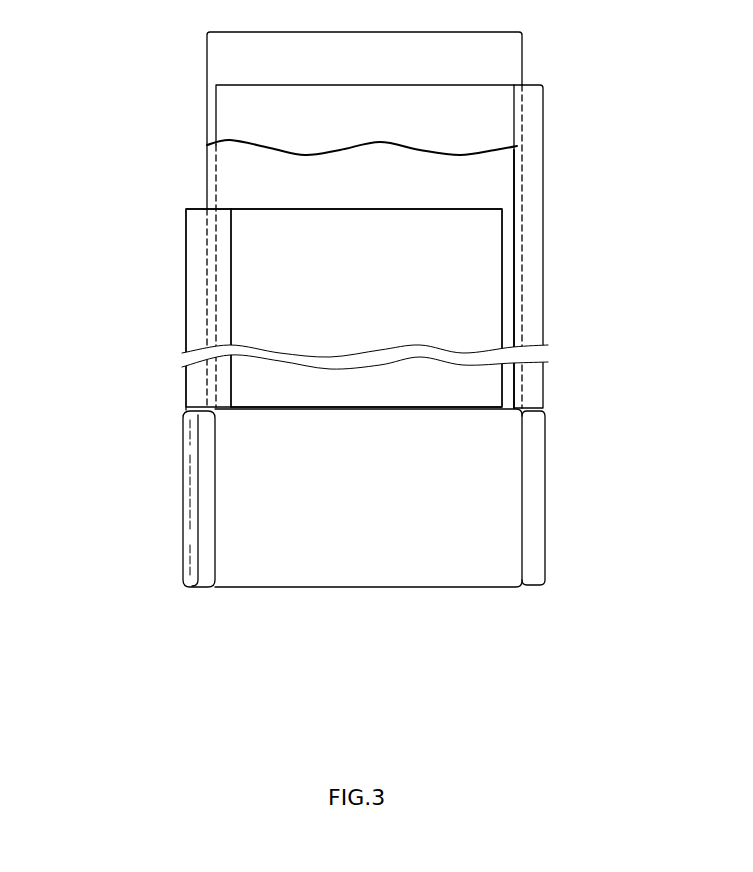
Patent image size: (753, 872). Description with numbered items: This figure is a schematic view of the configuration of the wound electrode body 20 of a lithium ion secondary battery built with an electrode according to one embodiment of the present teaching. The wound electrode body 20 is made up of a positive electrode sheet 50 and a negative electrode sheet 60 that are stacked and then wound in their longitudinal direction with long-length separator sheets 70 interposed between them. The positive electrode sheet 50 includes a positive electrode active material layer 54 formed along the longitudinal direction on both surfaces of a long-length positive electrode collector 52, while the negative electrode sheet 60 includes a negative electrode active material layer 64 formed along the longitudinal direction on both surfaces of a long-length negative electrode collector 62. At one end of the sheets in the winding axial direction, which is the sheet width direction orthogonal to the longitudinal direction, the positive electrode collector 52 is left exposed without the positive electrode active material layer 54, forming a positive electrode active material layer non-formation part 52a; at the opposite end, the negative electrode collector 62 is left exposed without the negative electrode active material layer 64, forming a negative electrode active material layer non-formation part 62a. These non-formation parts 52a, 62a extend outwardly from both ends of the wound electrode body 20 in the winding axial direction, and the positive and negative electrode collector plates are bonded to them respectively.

The wound electrode body 20 is at (423, 568).
The positive electrode sheet 50 is at (184, 278).
The positive electrode collector 52 is at (185, 338).
The positive electrode active material layer non-formation part 52a is at (202, 308).
The positive electrode active material layer 54 is at (247, 227).
The negative electrode sheet 60 is at (546, 158).
The negative electrode collector 62 is at (545, 253).
The negative electrode active material layer non-formation part 62a is at (530, 225).
The negative electrode active material layer 64 is at (515, 108).
The separator sheet 70 is at (228, 52).